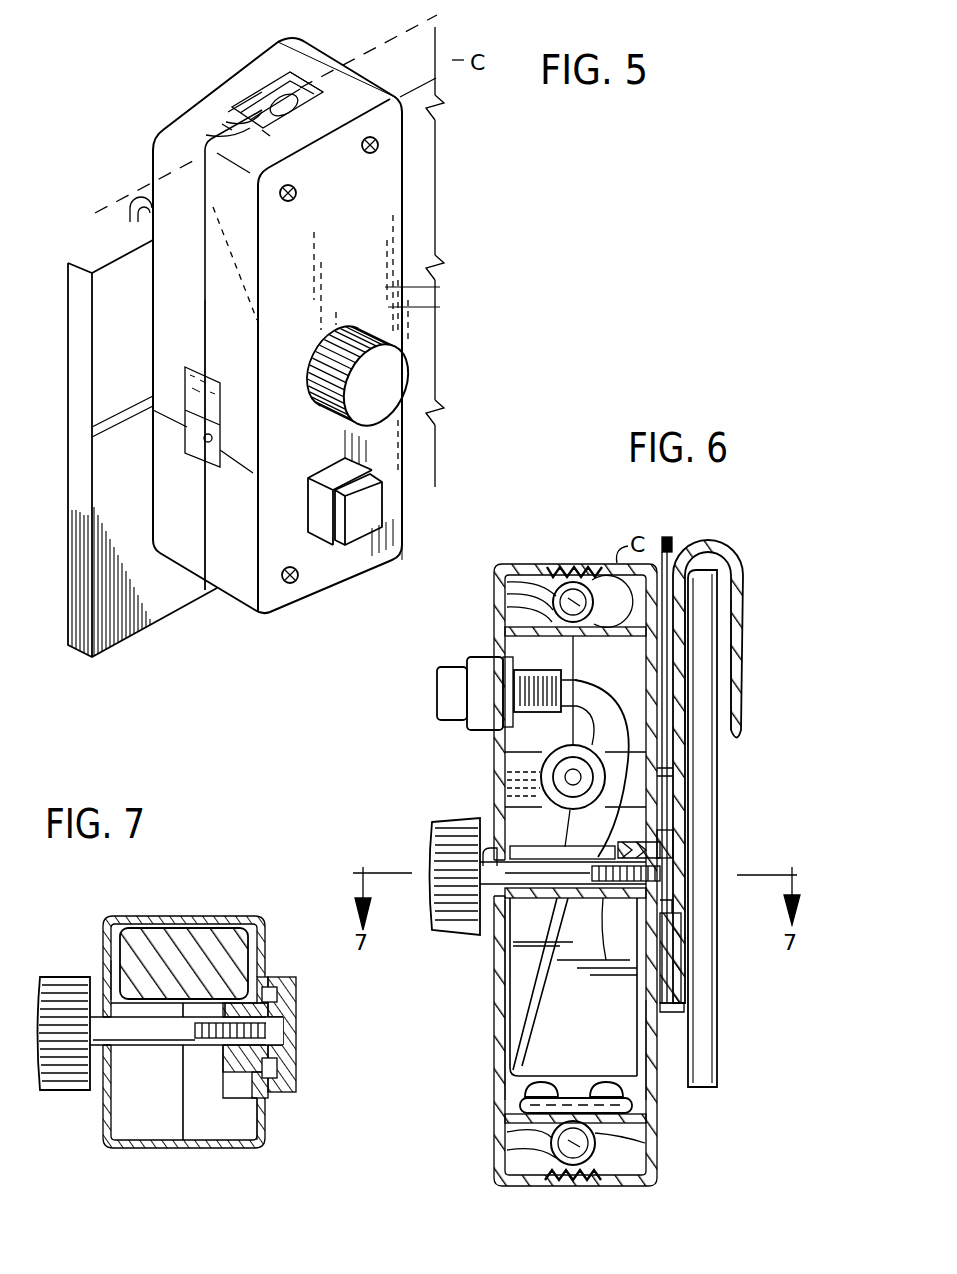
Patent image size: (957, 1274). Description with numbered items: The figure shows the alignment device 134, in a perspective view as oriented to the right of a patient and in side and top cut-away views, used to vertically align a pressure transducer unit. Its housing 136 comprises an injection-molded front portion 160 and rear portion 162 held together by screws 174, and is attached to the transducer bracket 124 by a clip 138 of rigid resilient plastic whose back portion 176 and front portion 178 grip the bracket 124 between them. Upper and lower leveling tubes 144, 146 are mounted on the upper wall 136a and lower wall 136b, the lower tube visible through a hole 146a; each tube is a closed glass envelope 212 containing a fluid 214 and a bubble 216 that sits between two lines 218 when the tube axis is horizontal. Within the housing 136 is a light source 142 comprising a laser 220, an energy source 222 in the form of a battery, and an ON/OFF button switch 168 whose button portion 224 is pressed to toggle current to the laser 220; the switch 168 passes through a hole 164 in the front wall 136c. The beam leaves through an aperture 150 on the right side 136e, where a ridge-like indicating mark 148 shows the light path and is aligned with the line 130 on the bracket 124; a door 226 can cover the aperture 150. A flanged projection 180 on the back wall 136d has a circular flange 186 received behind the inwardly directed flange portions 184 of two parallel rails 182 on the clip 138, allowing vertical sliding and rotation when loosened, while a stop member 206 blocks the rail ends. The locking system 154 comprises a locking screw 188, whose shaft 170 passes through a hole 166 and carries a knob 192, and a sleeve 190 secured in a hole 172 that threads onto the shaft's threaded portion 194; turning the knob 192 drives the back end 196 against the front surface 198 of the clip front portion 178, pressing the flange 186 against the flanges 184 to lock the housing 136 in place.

In FIG. 5, the transducer bracket 124 is at (110, 283).
In FIG. 6, the transducer bracket 124 is at (705, 1012).
In FIG. 5, the line 130 is at (125, 412).
In FIG. 5, the alignment device 134 is at (445, 212).
In FIG. 6, the alignment device 134 is at (580, 540).
In FIG. 7, the alignment device 134 is at (115, 900).
In FIG. 5, the housing 136 is at (386, 290).
In FIG. 6, the housing 136 is at (496, 1000).
In FIG. 7, the housing 136 is at (110, 922).
In FIG. 6, the upper wall 136a is at (536, 566).
In FIG. 5, the lower wall 136b is at (238, 73).
In FIG. 6, the lower wall 136b is at (632, 1187).
In FIG. 5, the front wall 136c is at (390, 307).
In FIG. 6, the front wall 136c is at (506, 1025).
In FIG. 7, the front wall 136c is at (112, 960).
In FIG. 6, the back wall 136d is at (618, 1066).
In FIG. 7, the back wall 136d is at (262, 1132).
In FIG. 5, the right side 136e is at (163, 333).
In FIG. 6, the clip 138 is at (712, 543).
In FIG. 6, the light source 142 is at (522, 764).
In FIG. 6, the upper leveling tube 144 is at (598, 567).
In FIG. 5, the lower leveling tube 146 is at (284, 72).
In FIG. 6, the lower leveling tube 146 is at (637, 1095).
In FIG. 5, the hole 146a is at (317, 73).
In FIG. 5, the indicating mark 148 is at (180, 432).
In FIG. 5, the aperture 150 is at (187, 453).
In FIG. 6, the locking system 154 is at (424, 829).
In FIG. 5, the front portion 160 is at (232, 575).
In FIG. 5, the rear portion 162 is at (183, 558).
In FIG. 6, the hole 164 is at (500, 708).
In FIG. 6, the hole 166 is at (487, 855).
In FIG. 5, the ON/OFF button switch 168 is at (380, 504).
In FIG. 6, the ON/OFF button switch 168 is at (474, 680).
In FIG. 6, the shaft 170 is at (525, 890).
In FIG. 7, the shaft 170 is at (140, 1038).
In FIG. 6, the hole 172 is at (605, 915).
In FIG. 5, the screws 174 is at (380, 143).
In FIG. 6, the back portion 176 is at (730, 665).
In FIG. 6, the front portion 178 is at (678, 748).
In FIG. 6, the flanged projection 180 is at (662, 840).
In FIG. 7, the flanged projection 180 is at (297, 1007).
In FIG. 7, the rails 182 is at (273, 975).
In FIG. 6, the flange portions 184 is at (662, 775).
In FIG. 7, the flange portions 184 is at (263, 992).
In FIG. 6, the flange 186 is at (668, 925).
In FIG. 7, the flange 186 is at (283, 994).
In FIG. 6, the locking screw 188 is at (580, 892).
In FIG. 7, the locking screw 188 is at (187, 1040).
In FIG. 6, the sleeve 190 is at (610, 930).
In FIG. 7, the sleeve 190 is at (224, 1095).
In FIG. 5, the knob 192 is at (395, 377).
In FIG. 6, the knob 192 is at (440, 856).
In FIG. 7, the knob 192 is at (63, 992).
In FIG. 6, the threaded portion 194 is at (584, 898).
In FIG. 7, the threaded portion 194 is at (210, 1047).
In FIG. 6, the back end 196 is at (668, 866).
In FIG. 6, the front surface 198 is at (667, 960).
In FIG. 6, the stop member 206 is at (668, 538).
In FIG. 5, the glass envelope 212 is at (227, 114).
In FIG. 6, the glass envelope 212 is at (566, 607).
In FIG. 6, the fluid 214 is at (546, 612).
In FIG. 5, the bubble 216 is at (252, 84).
In FIG. 6, the bubble 216 is at (540, 592).
In FIG. 5, the lines 218 is at (308, 78).
In FIG. 6, the laser 220 is at (564, 780).
In FIG. 6, the energy source 222 is at (652, 1040).
In FIG. 7, the energy source 222 is at (208, 937).
In FIG. 5, the button portion 224 is at (370, 519).
In FIG. 6, the button portion 224 is at (446, 702).
In FIG. 5, the door 226 is at (192, 400).